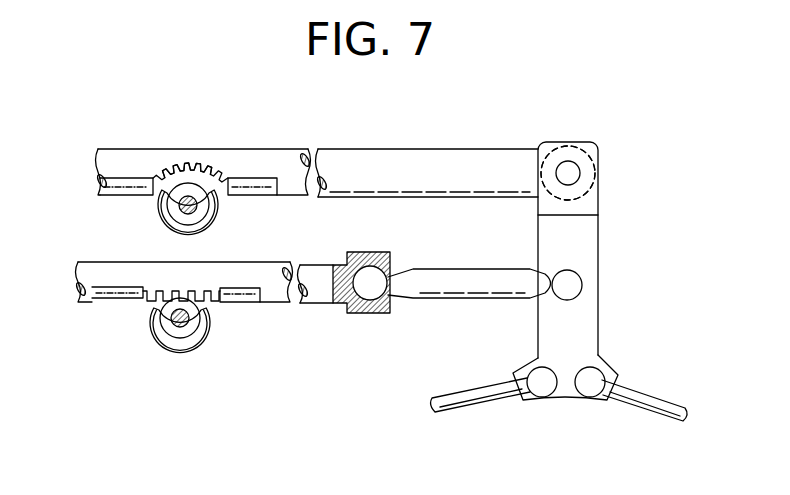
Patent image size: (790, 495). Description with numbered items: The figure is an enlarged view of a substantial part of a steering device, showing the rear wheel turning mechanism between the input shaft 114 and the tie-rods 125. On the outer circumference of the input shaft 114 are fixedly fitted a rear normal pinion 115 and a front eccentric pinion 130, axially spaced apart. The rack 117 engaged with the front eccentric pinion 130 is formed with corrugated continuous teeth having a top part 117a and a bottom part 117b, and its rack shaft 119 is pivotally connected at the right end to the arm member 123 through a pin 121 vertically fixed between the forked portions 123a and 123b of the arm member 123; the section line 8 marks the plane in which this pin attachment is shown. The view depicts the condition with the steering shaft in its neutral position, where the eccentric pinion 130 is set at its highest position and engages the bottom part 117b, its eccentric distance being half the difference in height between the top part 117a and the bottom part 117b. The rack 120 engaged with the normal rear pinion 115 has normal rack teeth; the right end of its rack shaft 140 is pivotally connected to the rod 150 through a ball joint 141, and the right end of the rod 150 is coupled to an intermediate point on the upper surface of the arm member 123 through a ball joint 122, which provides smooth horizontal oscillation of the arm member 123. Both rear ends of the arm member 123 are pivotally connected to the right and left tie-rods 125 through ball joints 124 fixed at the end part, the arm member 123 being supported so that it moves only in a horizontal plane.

The section line 8- 8 is at (570, 130).
The input shaft 114 is at (178, 206).
The rear normal pinion 115 is at (193, 341).
The rack 117 is at (237, 180).
The top part 117a is at (117, 180).
The bottom part 117b is at (203, 168).
The rack shaft 119 is at (348, 167).
The rack 120 is at (113, 292).
The pin 121 is at (569, 173).
The ball joint 122 is at (573, 288).
The arm member 123 is at (587, 237).
The forked portion 123a is at (588, 168).
The forked portion 123b is at (568, 173).
The ball joint 124 is at (542, 386).
The tie-rod 125 is at (453, 410).
The front eccentric pinion 130 is at (205, 199).
The rack shaft 140 is at (323, 295).
The ball joint 141 is at (372, 292).
The rod 150 is at (458, 278).